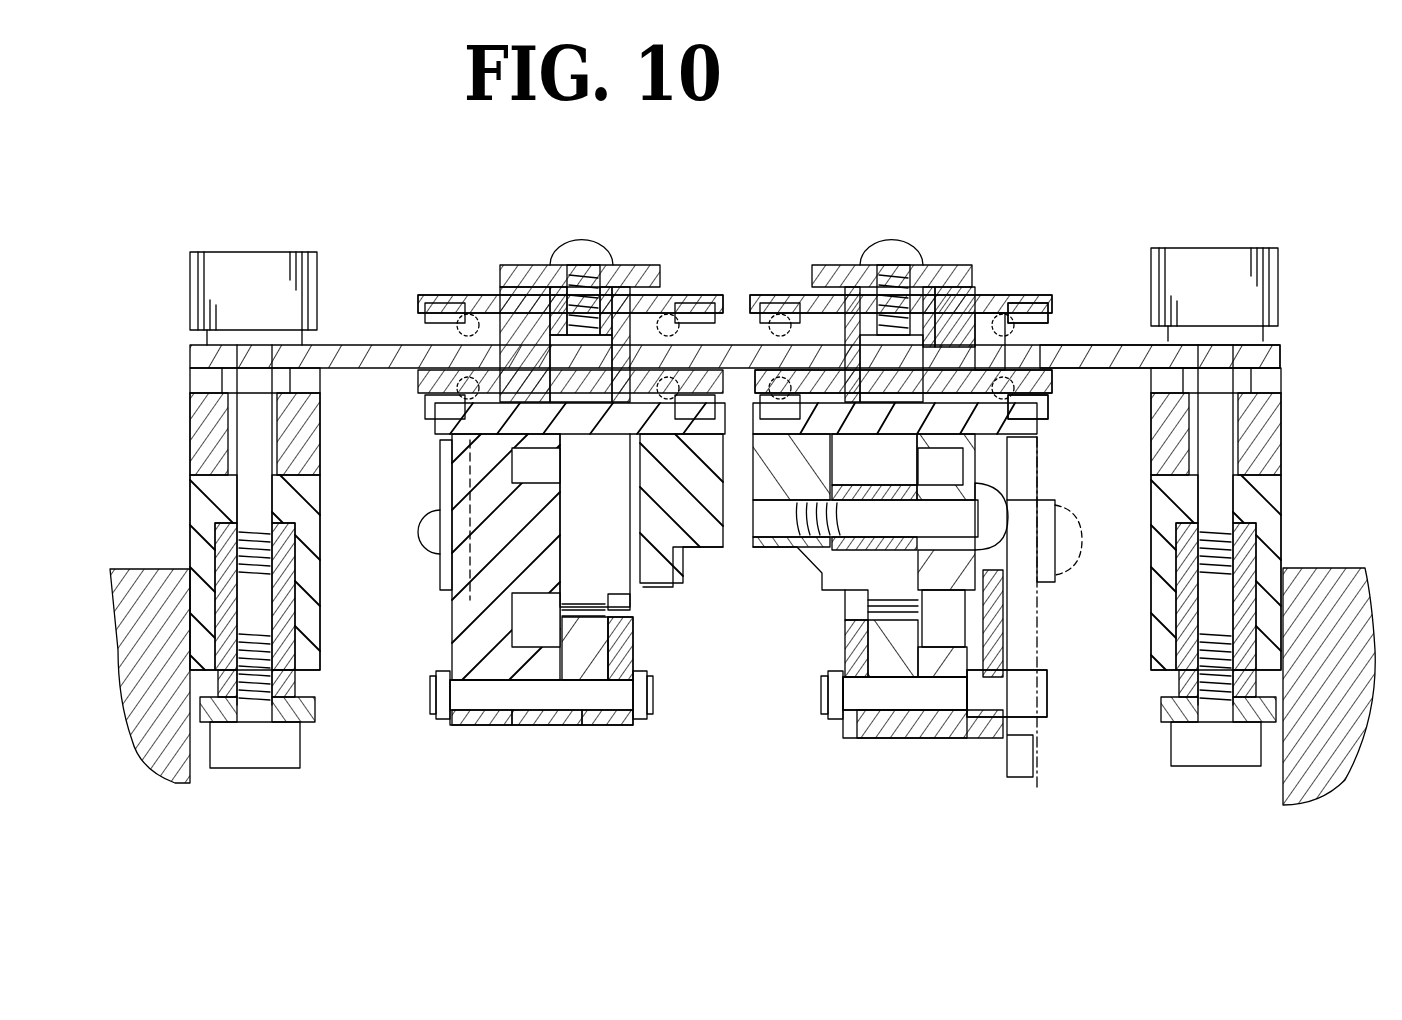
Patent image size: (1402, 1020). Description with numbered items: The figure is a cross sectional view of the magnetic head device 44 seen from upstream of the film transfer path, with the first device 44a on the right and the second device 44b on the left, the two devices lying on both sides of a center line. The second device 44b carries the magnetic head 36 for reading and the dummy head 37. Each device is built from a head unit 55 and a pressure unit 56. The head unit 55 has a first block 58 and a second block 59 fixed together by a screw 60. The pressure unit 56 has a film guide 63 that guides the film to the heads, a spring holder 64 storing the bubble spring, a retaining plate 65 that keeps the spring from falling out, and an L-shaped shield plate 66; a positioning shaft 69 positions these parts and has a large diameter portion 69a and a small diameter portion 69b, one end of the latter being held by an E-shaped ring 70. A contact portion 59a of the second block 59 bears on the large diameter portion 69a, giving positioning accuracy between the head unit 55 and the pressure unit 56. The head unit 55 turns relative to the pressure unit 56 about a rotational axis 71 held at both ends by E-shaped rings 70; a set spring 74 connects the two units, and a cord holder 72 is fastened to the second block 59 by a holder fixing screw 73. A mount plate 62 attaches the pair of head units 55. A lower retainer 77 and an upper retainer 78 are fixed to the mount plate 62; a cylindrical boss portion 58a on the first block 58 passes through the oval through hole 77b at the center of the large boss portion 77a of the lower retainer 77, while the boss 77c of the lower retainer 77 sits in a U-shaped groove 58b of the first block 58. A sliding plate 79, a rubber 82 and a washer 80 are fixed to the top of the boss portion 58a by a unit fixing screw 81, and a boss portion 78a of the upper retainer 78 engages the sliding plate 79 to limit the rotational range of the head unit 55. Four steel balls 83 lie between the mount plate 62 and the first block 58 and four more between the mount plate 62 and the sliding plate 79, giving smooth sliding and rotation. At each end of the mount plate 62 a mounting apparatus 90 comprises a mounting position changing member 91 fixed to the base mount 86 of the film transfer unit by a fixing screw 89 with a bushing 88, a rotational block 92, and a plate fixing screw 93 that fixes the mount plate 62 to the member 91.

The magnetic head 36 is at (658, 660).
The dummy head 37 is at (632, 640).
The magnetic head device 44 is at (1030, 145).
The first device 44a is at (1035, 228).
The second device 44b is at (458, 237).
The head unit 55 is at (420, 432).
The pressure unit 56 is at (512, 752).
The first block 58 is at (613, 590).
The boss portion 58a is at (932, 335).
The U-shaped groove 58b is at (874, 492).
The second block 59 is at (1000, 450).
The contact portion 59a is at (985, 642).
The screw 60 is at (993, 515).
The mount plate 62 is at (365, 347).
The film guide 63 is at (625, 722).
The spring holder 64 is at (587, 718).
The retaining plate 65 is at (552, 722).
The shield plate 66 is at (1005, 618).
The positioning shaft 69 is at (918, 847).
The large diameter portion 69a is at (985, 722).
The small diameter portion 69b is at (940, 722).
The E-shaped ring 70 is at (445, 678).
The rotational axis 71 is at (472, 695).
The cord holder 72 is at (440, 458).
The holder fixing screw 73 is at (415, 530).
The set spring 74 is at (1040, 748).
The lower retainer 77 is at (1090, 372).
The boss portion 77a is at (985, 300).
The through hole 77b is at (942, 300).
The boss 77c is at (660, 572).
The upper retainer 78 is at (1050, 335).
The boss portion 78a is at (690, 305).
The sliding plate 79 is at (1040, 293).
The washer 80 is at (845, 265).
The unit fixing screw 81 is at (890, 245).
The rubber 82 is at (832, 297).
The steel balls 83 is at (465, 303).
The base mount 86 is at (140, 568).
The bushing 88 is at (305, 725).
The fixing screw 89 is at (250, 765).
The mounting apparatus 90 is at (168, 402).
The mounting position changing member 91 is at (190, 500).
The rotational block 92 is at (190, 432).
The plate fixing screw 93 is at (247, 257).